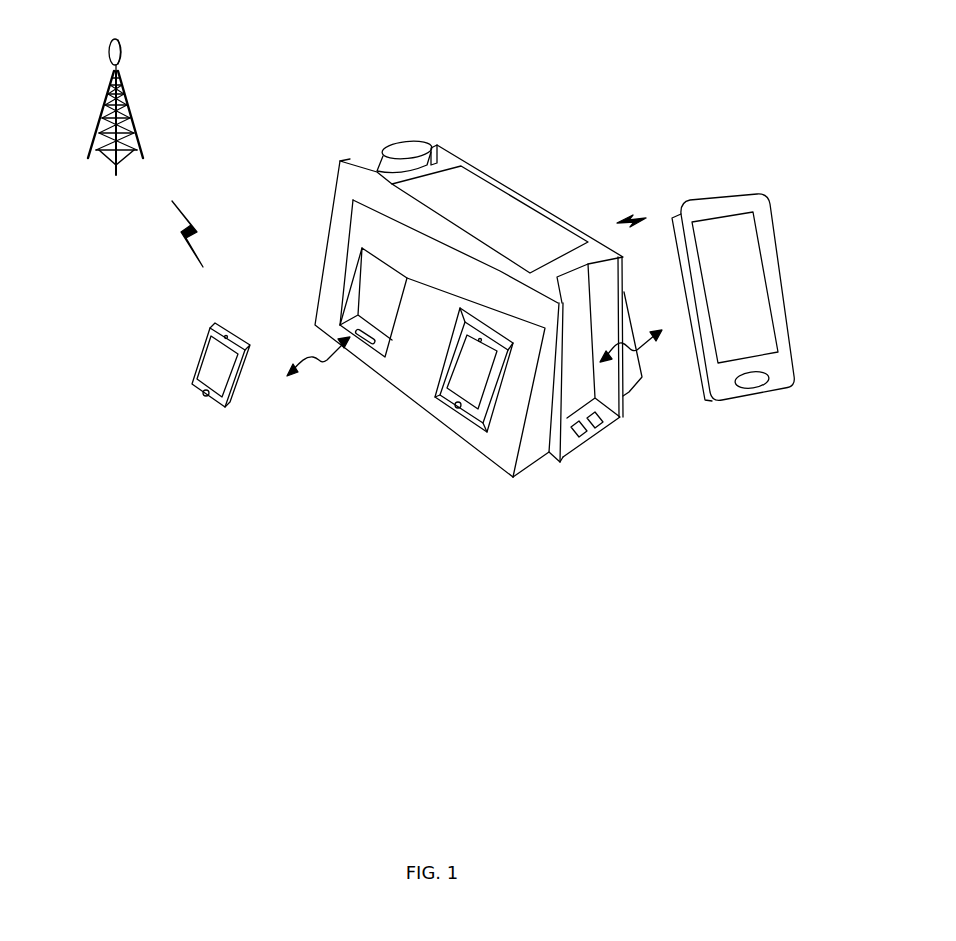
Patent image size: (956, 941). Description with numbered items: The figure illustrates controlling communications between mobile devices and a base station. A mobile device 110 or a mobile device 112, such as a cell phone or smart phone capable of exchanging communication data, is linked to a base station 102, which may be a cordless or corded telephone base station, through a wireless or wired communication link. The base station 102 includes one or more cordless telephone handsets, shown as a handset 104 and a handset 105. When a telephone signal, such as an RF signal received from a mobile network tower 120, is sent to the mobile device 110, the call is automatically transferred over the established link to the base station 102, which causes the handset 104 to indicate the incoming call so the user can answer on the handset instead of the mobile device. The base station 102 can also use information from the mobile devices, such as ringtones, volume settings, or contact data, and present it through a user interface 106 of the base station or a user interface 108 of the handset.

The base station 102 is at (567, 210).
The cordless telephone handset 104 is at (752, 274).
The handset 105 is at (410, 147).
The user interface 106 is at (481, 185).
The user interface 108 is at (753, 252).
The mobile device 110 is at (203, 377).
The mobile device 112 is at (457, 383).
The mobile network tower 120 is at (108, 83).